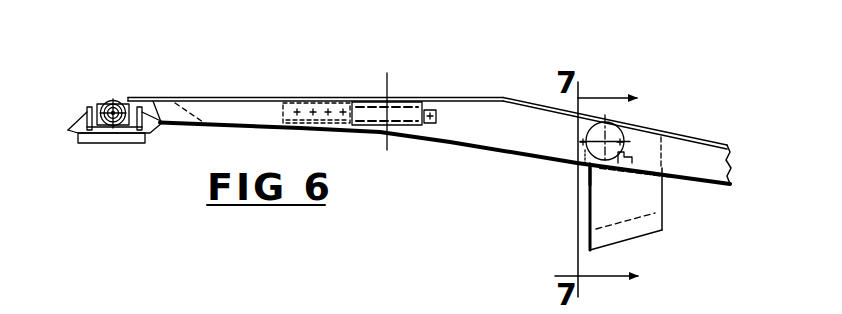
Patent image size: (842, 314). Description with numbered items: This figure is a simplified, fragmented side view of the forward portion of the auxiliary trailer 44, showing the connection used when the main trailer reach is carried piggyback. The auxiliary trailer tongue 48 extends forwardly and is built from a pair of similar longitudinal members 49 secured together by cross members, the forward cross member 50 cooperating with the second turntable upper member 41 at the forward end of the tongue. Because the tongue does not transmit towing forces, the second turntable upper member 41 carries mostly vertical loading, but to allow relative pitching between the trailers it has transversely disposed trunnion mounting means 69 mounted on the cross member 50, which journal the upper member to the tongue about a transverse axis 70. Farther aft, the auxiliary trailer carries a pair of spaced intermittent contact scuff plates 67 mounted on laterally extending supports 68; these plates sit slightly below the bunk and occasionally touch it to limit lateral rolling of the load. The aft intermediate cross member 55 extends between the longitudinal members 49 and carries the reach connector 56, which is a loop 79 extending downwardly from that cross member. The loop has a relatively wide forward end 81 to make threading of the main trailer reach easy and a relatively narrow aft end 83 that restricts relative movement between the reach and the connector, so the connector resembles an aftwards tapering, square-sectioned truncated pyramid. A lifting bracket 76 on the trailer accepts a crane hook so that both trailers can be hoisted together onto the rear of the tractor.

The second turntable upper member 41 is at (124, 144).
The auxiliary trailer 44 is at (444, 101).
The auxiliary trailer tongue 48 is at (631, 118).
The longitudinal members 49 is at (677, 135).
The cross member 50 is at (115, 82).
The aft intermediate cross member 55 is at (570, 181).
The reach connector 56 is at (529, 207).
The intermittent contact scuff plates 67 is at (394, 98).
The laterally extending supports 68 is at (364, 126).
The trunnion mounting means 69 is at (110, 92).
The transverse axis 70 is at (106, 104).
The lifting bracket 76 is at (437, 116).
The loop 79 is at (571, 226).
The forward end 81 is at (587, 248).
The aft end 83 is at (663, 207).